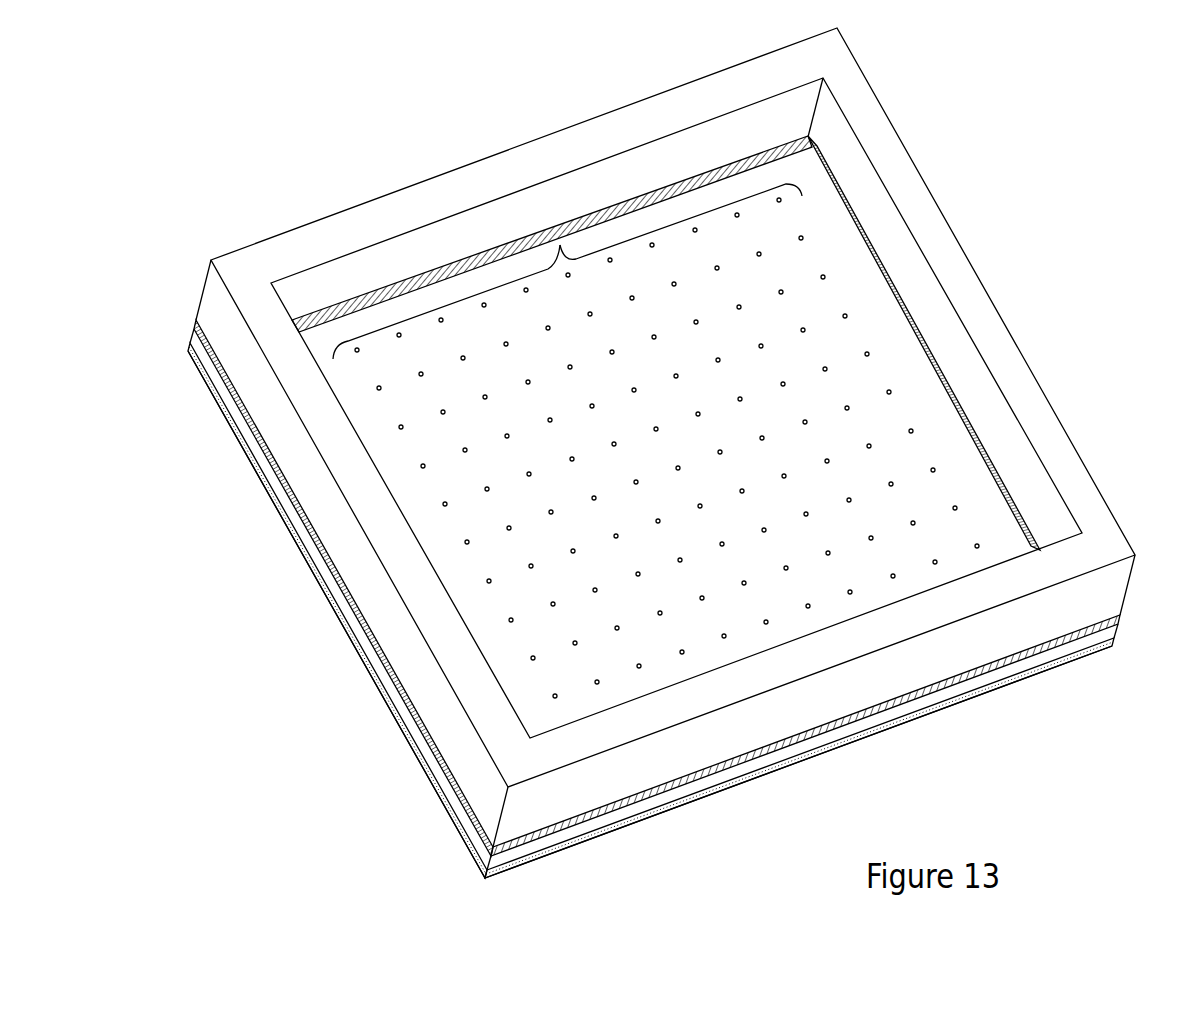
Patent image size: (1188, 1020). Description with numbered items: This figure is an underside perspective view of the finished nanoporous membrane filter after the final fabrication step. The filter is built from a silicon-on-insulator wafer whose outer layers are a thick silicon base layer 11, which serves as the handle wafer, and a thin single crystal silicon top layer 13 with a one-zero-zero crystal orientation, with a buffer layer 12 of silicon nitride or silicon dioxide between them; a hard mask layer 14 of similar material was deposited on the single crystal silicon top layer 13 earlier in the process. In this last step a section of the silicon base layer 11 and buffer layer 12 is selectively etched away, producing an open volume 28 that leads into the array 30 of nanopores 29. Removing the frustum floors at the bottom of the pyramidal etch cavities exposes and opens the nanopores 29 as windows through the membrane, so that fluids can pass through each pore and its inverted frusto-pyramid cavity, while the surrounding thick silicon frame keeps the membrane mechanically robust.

The silicon base layer 11 is at (206, 276).
The buffer layer 12 is at (195, 326).
The single crystal silicon top layer 13 is at (193, 340).
The hard mask layer 14 is at (1115, 647).
The open volume 28 is at (927, 395).
The nanopores 29 is at (848, 310).
The array of nanopores 30 is at (560, 245).